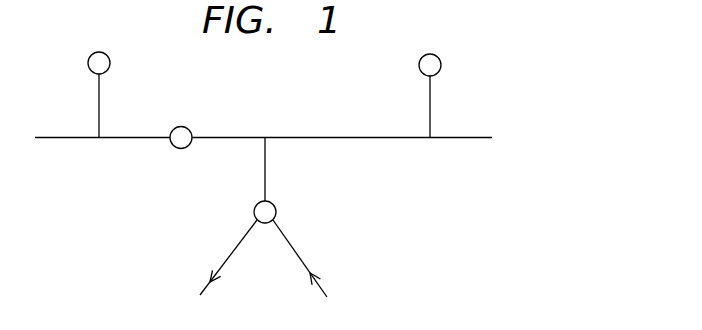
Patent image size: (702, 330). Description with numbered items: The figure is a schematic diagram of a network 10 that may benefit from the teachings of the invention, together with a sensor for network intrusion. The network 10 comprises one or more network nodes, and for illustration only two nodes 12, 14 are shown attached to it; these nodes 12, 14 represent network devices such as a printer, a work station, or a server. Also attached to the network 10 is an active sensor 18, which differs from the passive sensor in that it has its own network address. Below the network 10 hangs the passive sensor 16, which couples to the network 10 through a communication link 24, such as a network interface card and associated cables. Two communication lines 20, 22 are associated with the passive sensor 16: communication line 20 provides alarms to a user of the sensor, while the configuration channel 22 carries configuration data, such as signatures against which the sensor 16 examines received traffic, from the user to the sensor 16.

The network 10 is at (542, 125).
The node 12 is at (88, 62).
The node 14 is at (441, 64).
The passive sensor 16 is at (263, 223).
The active sensor 18 is at (180, 127).
The communication line 20 is at (230, 255).
The configuration channel 22 is at (295, 253).
The communication link 24 is at (267, 168).